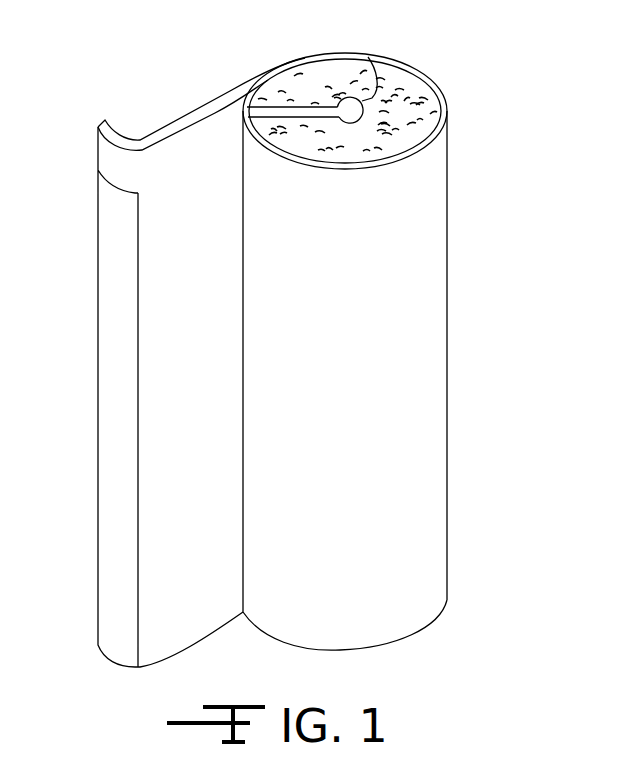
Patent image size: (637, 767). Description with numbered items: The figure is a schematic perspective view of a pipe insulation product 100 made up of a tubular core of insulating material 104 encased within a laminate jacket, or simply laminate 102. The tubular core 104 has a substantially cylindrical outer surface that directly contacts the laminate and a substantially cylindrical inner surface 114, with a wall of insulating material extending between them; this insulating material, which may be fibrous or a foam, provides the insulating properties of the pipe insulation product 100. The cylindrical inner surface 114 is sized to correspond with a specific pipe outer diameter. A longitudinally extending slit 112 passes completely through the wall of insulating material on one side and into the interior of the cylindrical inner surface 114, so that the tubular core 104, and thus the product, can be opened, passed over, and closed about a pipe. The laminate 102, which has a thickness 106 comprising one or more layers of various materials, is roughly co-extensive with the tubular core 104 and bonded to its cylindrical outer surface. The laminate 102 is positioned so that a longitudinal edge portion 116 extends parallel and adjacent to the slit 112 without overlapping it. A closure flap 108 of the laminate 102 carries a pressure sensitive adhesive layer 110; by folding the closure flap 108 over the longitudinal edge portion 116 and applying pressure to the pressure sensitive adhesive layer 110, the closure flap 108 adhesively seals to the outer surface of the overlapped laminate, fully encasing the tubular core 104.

The pipe insulation product 100 is at (515, 90).
The laminate jacket 102 is at (425, 515).
The tubular core of insulating material 104 is at (437, 110).
The thickness of the laminate 106 is at (327, 157).
The closure flap 108 is at (123, 162).
The pressure sensitive adhesive layer 110 is at (110, 512).
The longitudinally extending slit 112 is at (281, 107).
The cylindrical inner surface 114 is at (368, 57).
The longitudinal edge portion 116 is at (252, 449).